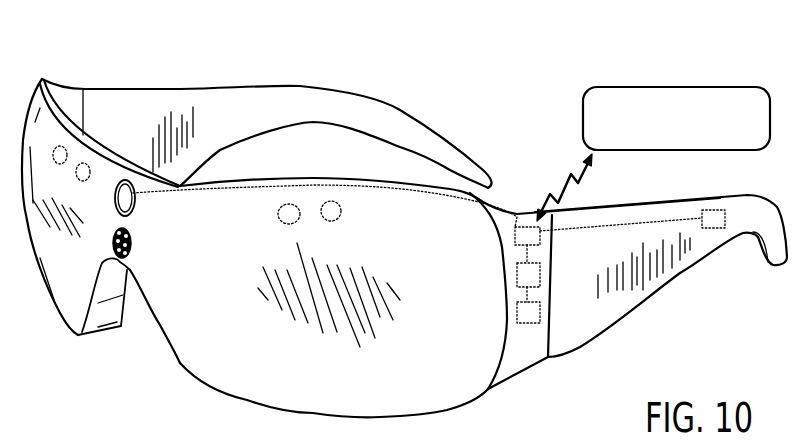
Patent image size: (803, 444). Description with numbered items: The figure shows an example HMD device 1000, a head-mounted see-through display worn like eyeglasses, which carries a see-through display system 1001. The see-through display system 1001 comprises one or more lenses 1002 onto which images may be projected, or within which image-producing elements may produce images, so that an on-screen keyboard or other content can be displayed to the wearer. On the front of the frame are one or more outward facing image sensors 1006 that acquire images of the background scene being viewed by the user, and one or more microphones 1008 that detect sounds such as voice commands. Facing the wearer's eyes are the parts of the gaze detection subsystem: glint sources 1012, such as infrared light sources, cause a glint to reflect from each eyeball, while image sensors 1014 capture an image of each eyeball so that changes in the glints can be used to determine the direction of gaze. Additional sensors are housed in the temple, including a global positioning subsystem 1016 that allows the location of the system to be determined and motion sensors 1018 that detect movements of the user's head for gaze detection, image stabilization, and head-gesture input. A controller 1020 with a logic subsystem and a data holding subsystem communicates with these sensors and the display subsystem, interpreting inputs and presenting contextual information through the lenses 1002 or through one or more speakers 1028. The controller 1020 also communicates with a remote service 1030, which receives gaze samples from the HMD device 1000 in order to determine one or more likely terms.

The HMD device 1000 is at (164, 56).
The see-through display system 1001 is at (477, 100).
The lenses 1002 is at (437, 390).
The outward facing image sensors 1006 is at (150, 205).
The microphones 1008 is at (148, 249).
The glint sources 1012 is at (86, 163).
The image sensors 1014 is at (60, 145).
The global positioning (GPS) subsystem 1016 is at (542, 272).
The motion sensors 1018 is at (542, 308).
The controller 1020 is at (517, 225).
The speakers 1028 is at (708, 209).
The remote service 1030 is at (730, 86).